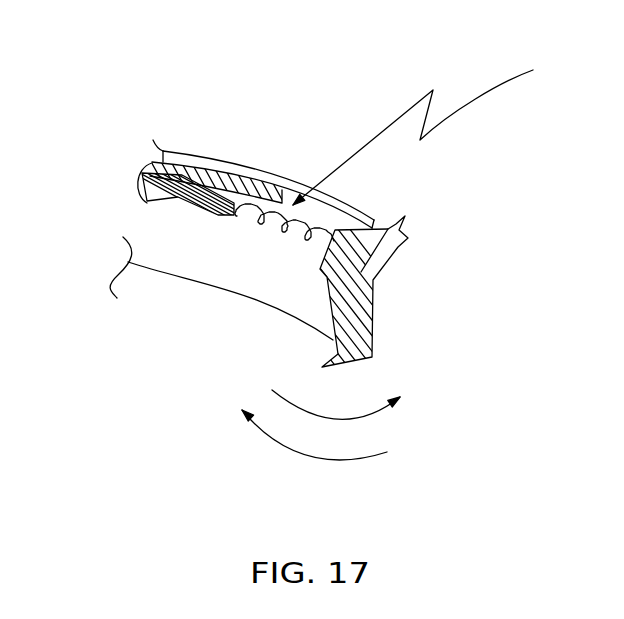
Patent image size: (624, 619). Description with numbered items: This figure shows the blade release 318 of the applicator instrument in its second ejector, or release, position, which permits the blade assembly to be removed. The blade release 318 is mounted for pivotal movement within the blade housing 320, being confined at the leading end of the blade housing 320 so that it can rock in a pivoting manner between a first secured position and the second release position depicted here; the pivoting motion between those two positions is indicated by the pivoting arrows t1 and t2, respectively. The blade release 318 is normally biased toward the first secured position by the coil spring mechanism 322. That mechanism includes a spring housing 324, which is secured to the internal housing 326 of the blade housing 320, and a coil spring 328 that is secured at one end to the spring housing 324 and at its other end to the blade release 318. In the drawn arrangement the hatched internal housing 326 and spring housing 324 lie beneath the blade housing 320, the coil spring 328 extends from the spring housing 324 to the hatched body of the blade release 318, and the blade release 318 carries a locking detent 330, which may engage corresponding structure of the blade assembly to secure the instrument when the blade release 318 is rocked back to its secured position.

The blade release 318 is at (410, 247).
The blade housing 320 is at (207, 150).
The coil spring mechanism 322 is at (433, 132).
The spring housing 324 is at (187, 187).
The internal housing 326 is at (182, 165).
The coil spring 328 is at (303, 222).
The locking detent 330 is at (322, 366).
The pivoting arrow t1 is at (373, 415).
The pivoting arrow t2 is at (360, 462).